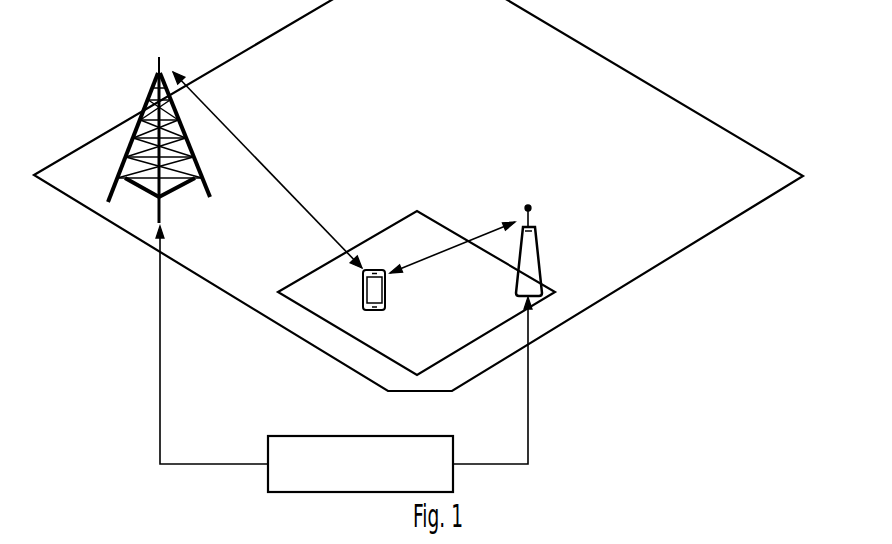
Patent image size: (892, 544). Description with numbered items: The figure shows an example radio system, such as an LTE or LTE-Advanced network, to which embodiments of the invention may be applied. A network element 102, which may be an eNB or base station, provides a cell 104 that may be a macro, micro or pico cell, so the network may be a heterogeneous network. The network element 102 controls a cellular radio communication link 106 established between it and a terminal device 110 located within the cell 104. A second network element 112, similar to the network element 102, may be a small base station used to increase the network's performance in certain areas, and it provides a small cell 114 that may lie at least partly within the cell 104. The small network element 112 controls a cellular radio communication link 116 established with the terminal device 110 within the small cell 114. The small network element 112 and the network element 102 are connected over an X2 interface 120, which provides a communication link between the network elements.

The network element 102 is at (153, 83).
The cell 104 is at (85, 207).
The cellular radio communication link 106 is at (229, 130).
The terminal device 110 is at (377, 312).
The second network element 112 is at (537, 238).
The small cell 114 is at (415, 208).
The cellular radio communication link 116 is at (483, 234).
The X2 interface 120 is at (313, 479).